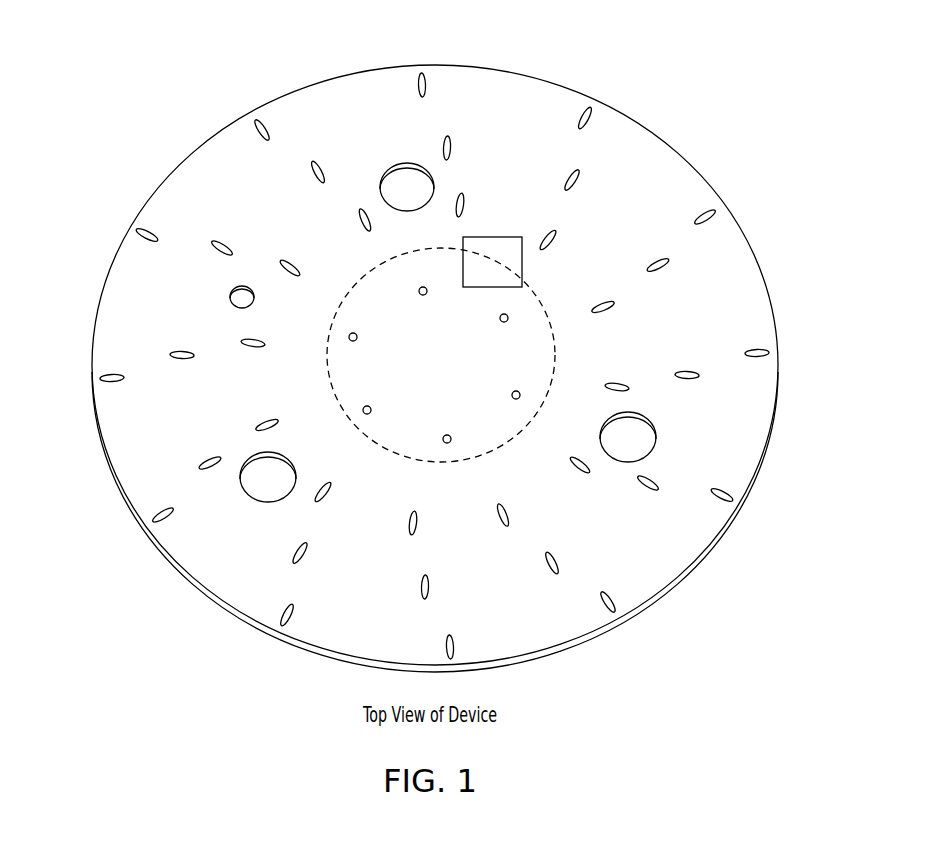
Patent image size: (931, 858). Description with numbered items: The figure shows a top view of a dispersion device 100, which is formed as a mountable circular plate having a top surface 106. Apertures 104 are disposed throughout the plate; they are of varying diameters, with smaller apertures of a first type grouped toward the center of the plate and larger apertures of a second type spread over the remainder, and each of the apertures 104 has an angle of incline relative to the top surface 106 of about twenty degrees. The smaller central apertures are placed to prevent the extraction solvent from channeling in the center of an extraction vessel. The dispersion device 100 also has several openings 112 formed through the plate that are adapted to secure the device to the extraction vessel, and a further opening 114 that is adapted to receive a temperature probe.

The dispersion device 100 is at (717, 158).
The apertures 104 is at (167, 557).
The top surface 106 is at (183, 445).
The openings 112 is at (410, 187).
The opening 114 is at (242, 297).